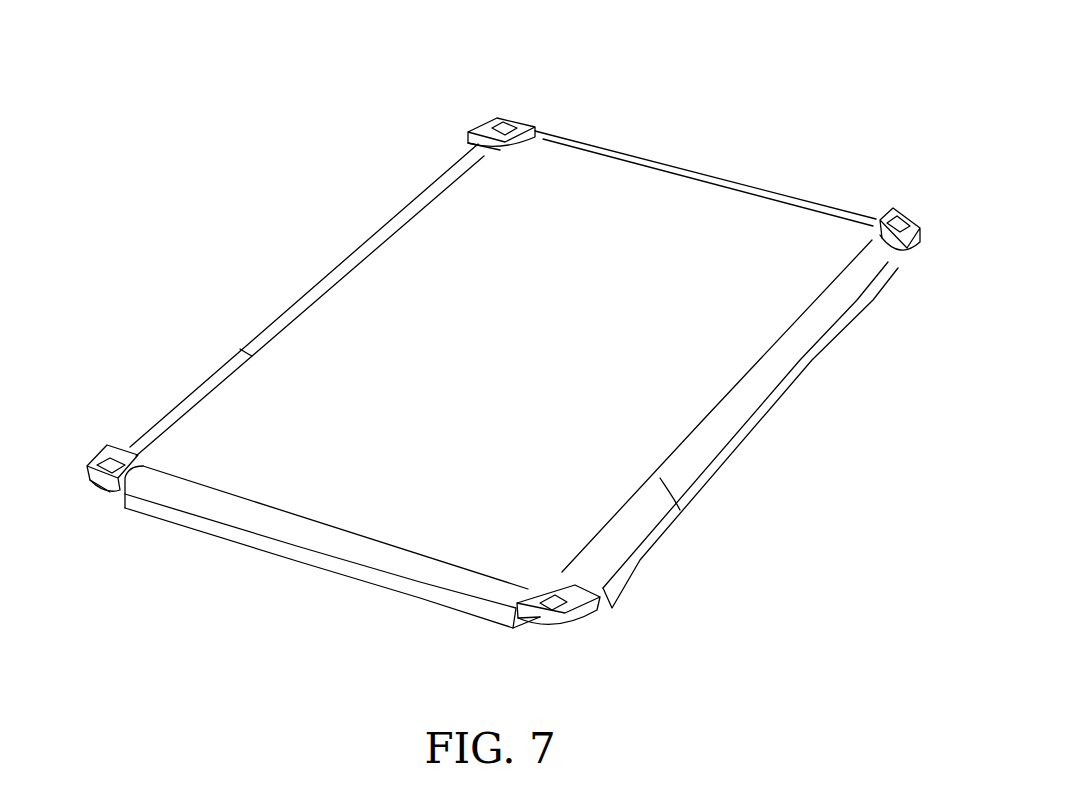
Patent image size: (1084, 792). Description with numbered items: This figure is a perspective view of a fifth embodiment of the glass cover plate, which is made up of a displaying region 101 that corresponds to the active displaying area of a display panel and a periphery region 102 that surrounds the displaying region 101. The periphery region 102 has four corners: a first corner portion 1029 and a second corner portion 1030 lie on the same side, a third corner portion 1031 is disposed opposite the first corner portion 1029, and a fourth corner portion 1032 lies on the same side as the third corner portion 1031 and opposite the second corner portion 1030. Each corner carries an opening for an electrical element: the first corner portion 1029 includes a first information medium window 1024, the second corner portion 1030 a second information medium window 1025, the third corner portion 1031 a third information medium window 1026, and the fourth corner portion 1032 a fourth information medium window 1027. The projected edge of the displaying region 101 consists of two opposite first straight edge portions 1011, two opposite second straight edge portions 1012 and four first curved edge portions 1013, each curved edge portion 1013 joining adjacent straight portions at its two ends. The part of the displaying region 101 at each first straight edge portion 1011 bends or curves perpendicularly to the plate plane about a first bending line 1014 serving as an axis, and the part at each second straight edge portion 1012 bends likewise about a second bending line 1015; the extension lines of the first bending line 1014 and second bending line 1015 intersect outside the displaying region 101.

The displaying region 101 is at (673, 163).
The periphery region 102 is at (487, 128).
The first straight edge portion 1011 is at (273, 537).
The second straight edge portion 1012 is at (788, 378).
The first curved edge portion 1013 is at (493, 139).
The first bending line 1014 is at (548, 138).
The second bending line 1015 is at (653, 478).
The first information medium window 1024 is at (897, 212).
The second information medium window 1025 is at (494, 126).
The third information medium window 1026 is at (113, 447).
The fourth information medium window 1027 is at (577, 620).
The first corner portion 1029 is at (879, 216).
The second corner portion 1030 is at (474, 132).
The third corner portion 1031 is at (119, 476).
The fourth corner portion 1032 is at (582, 597).